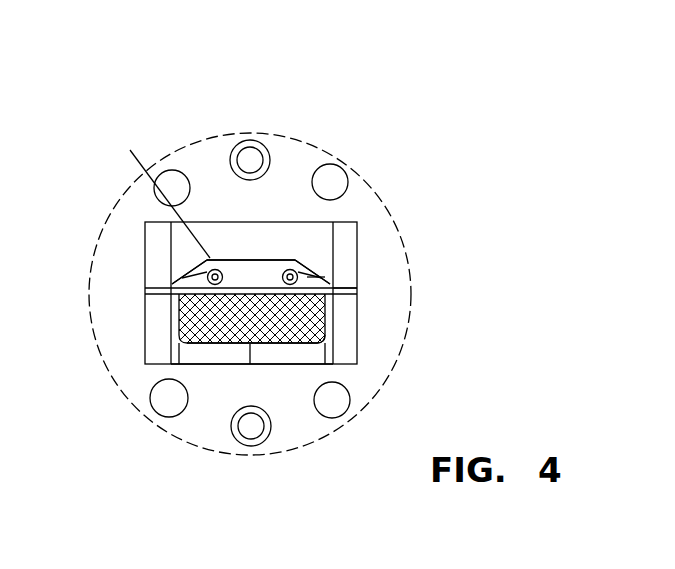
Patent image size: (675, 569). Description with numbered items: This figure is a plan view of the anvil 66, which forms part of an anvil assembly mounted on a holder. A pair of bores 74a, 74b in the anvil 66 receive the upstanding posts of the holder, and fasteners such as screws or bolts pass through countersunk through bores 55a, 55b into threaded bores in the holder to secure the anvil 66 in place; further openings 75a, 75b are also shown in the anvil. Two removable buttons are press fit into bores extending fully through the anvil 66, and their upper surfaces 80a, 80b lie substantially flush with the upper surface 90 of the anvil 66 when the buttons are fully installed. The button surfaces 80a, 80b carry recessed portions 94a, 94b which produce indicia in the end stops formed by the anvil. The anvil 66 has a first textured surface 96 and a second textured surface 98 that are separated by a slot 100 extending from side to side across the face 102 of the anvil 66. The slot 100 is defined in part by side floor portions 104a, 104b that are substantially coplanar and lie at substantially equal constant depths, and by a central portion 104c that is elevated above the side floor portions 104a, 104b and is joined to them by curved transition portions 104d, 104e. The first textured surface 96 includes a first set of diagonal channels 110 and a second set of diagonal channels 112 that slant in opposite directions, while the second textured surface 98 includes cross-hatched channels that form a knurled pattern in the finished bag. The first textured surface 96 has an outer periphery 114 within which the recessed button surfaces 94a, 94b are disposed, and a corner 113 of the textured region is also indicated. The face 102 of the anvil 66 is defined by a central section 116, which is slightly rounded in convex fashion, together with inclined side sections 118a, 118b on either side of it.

The countersunk through bore 55a is at (248, 148).
The countersunk through bore 55b is at (248, 432).
The anvil 66 is at (315, 365).
The bore 74a is at (347, 176).
The bore 74b is at (164, 411).
The port 75a is at (166, 172).
The port 75b is at (340, 405).
The upper surface of button 80a is at (300, 275).
The upper surface of button 80b is at (212, 270).
The upper surface of anvil 90 is at (236, 290).
The recessed portion 94a is at (208, 273).
The recessed portion 94b is at (335, 288).
The first textured surface 96 is at (268, 290).
The second textured surface 98 is at (238, 343).
The slot 100 is at (182, 292).
The face of anvil 102 is at (210, 348).
The side floor portion 104a is at (195, 296).
The side floor portion 104b is at (360, 310).
The central portion 104c is at (270, 260).
The curved transition portion 104d is at (234, 260).
The curved transition portion 104e is at (273, 343).
The first set of diagonal channels 110 is at (248, 290).
The second set of diagonal channels 112 is at (298, 268).
The corner 113 is at (320, 343).
The outer periphery 114 is at (151, 192).
The central section 116 is at (247, 358).
The inclined side section 118a is at (155, 347).
The inclined side section 118b is at (345, 332).